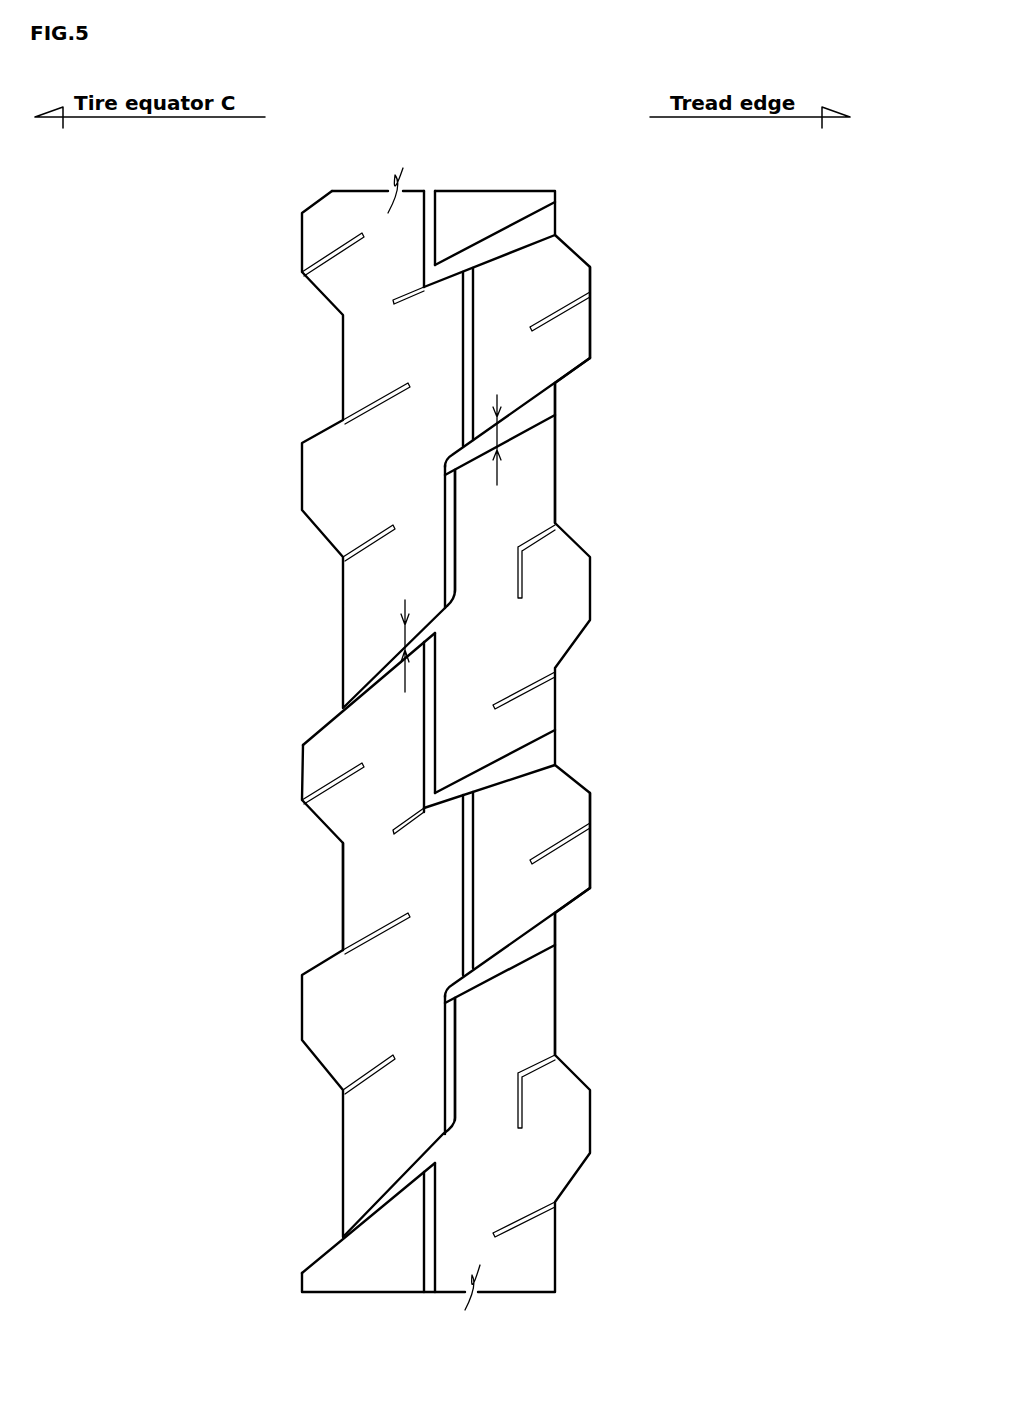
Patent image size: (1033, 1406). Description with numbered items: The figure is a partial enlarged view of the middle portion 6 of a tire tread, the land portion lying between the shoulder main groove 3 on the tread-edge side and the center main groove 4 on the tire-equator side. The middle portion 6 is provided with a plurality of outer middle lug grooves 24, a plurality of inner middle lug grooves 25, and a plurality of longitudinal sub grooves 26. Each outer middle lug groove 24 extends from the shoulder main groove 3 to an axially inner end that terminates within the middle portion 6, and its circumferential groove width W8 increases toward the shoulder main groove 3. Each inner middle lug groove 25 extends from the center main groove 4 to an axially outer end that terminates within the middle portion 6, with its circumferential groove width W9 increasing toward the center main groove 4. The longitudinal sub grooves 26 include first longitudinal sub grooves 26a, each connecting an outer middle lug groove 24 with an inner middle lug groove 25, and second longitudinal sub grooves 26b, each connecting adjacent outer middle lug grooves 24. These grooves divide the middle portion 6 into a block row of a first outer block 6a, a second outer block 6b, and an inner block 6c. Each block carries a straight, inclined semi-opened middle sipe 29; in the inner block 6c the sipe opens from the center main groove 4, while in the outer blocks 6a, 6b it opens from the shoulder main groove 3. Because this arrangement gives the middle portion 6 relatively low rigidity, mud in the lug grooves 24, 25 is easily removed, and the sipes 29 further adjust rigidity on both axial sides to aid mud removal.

The shoulder main groove 3 is at (621, 838).
The center main groove 4 is at (319, 616).
The middle portion 6 is at (470, 215).
The first outer block 6a is at (545, 610).
The second outer block 6b is at (545, 280).
The inner block 6c is at (385, 875).
The outer middle lug groove 24 is at (525, 230).
The inner middle lug groove 25 is at (365, 672).
The longitudinal sub groove 26 is at (470, 360).
The first longitudinal sub groove 26a is at (435, 705).
The second longitudinal sub groove 26b is at (470, 853).
The semi-opened middle sipe 29 is at (380, 400).
The groove width of outer middle lug groove W8 is at (497, 438).
The groove width of inner middle lug groove W9 is at (388, 630).